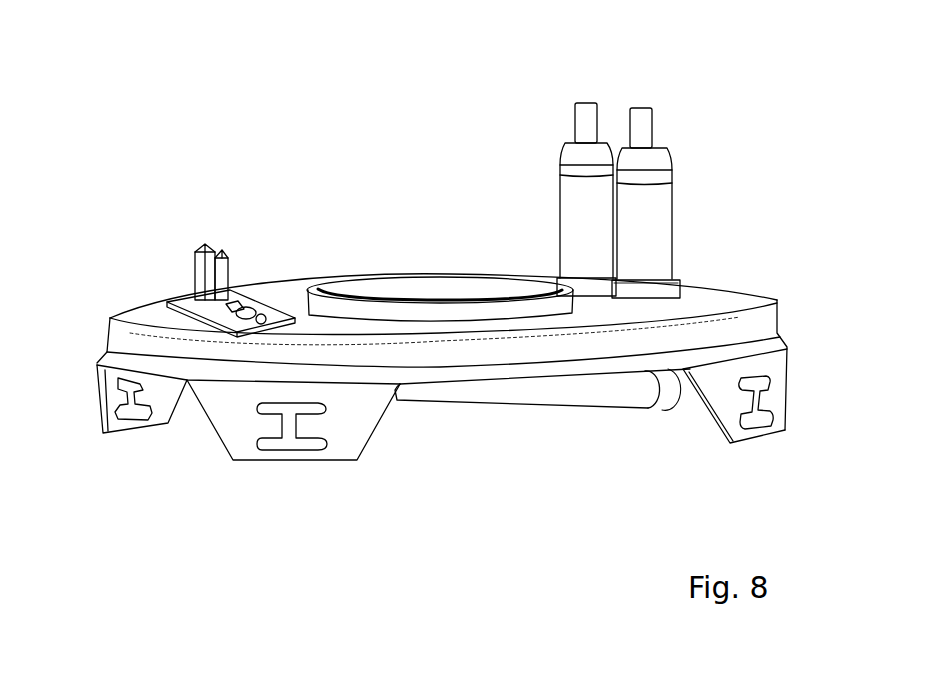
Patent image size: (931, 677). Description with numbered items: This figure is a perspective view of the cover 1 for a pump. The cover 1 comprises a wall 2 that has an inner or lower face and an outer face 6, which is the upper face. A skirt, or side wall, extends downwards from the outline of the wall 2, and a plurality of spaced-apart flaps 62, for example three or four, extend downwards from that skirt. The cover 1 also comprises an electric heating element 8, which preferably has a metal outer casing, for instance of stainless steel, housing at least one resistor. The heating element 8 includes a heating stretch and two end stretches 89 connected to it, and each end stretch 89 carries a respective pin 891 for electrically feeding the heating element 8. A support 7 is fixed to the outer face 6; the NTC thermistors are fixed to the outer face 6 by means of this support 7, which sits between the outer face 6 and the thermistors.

The cover 1 is at (345, 155).
The wall 2 is at (742, 293).
The outer face 6 is at (720, 297).
The support 7 is at (183, 297).
The heating element 8 is at (573, 407).
The flaps 62 is at (112, 423).
The end stretches 89 is at (565, 203).
The pin 891 is at (585, 132).